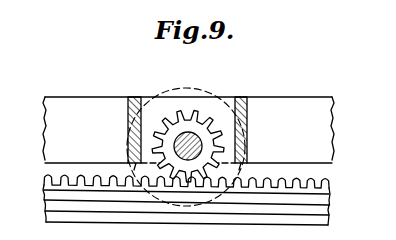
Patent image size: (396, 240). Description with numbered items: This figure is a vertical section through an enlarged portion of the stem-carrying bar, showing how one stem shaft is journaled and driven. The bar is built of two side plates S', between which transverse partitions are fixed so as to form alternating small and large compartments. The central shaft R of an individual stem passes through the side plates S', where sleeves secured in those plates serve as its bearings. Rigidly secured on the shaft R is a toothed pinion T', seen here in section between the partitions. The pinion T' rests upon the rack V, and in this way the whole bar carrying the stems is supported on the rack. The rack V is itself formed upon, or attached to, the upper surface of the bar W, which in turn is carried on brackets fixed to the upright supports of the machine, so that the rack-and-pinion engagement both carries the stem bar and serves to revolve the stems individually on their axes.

The side plates S' is at (188, 130).
The toothed pinion T' is at (188, 143).
The shaft R is at (188, 140).
The rack V is at (330, 187).
The bar W is at (329, 214).